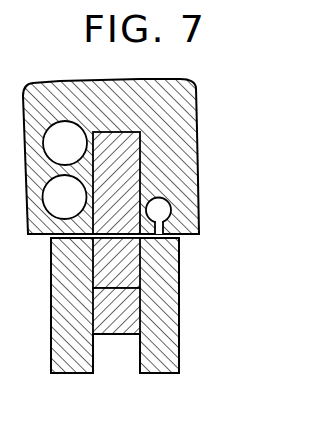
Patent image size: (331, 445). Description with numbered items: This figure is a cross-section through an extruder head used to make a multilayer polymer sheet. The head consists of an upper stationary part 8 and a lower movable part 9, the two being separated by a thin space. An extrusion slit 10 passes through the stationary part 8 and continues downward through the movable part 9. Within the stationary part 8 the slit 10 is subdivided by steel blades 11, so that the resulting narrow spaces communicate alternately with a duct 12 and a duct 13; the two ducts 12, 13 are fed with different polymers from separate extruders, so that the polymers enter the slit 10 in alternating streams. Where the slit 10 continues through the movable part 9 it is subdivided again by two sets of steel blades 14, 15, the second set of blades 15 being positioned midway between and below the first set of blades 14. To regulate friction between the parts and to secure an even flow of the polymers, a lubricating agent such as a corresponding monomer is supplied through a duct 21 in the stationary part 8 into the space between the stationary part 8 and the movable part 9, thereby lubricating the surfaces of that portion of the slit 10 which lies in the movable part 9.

The stationary part 8 is at (197, 181).
The movable part 9 is at (179, 303).
The extrusion slit 10 is at (140, 143).
The steel blades 11 is at (123, 163).
The duct 12 is at (75, 150).
The duct 13 is at (75, 204).
The steel blades 14 is at (118, 270).
The steel blades 15 is at (103, 309).
The duct 21 is at (162, 210).